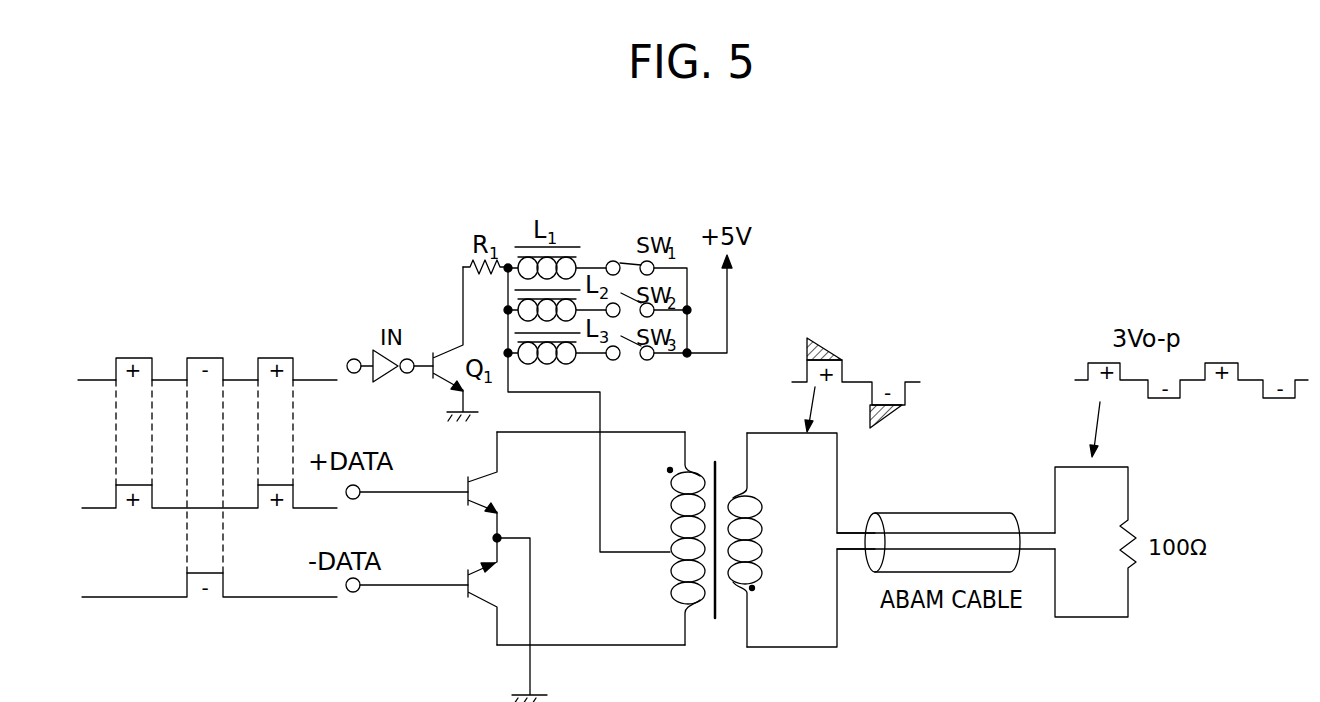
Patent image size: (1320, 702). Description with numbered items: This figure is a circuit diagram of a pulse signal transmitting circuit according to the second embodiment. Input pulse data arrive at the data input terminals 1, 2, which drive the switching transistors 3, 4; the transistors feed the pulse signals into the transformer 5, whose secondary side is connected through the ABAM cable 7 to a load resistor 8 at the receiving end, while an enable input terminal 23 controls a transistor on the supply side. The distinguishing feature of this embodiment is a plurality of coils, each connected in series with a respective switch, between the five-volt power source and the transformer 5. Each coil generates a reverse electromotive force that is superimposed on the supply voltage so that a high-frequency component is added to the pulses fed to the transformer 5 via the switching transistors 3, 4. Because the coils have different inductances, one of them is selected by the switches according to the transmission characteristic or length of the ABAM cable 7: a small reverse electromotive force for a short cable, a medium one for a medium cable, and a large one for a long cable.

The data input terminal 1 is at (352, 499).
The data input terminal 2 is at (352, 592).
The switching transistor 3 is at (468, 485).
The switching transistor 4 is at (468, 590).
The transformer 5 is at (715, 637).
The ABAM cable 7 is at (937, 512).
The 100 ohm terminating resistor 8 is at (1137, 533).
The enable input terminal (IN) 23 is at (352, 360).